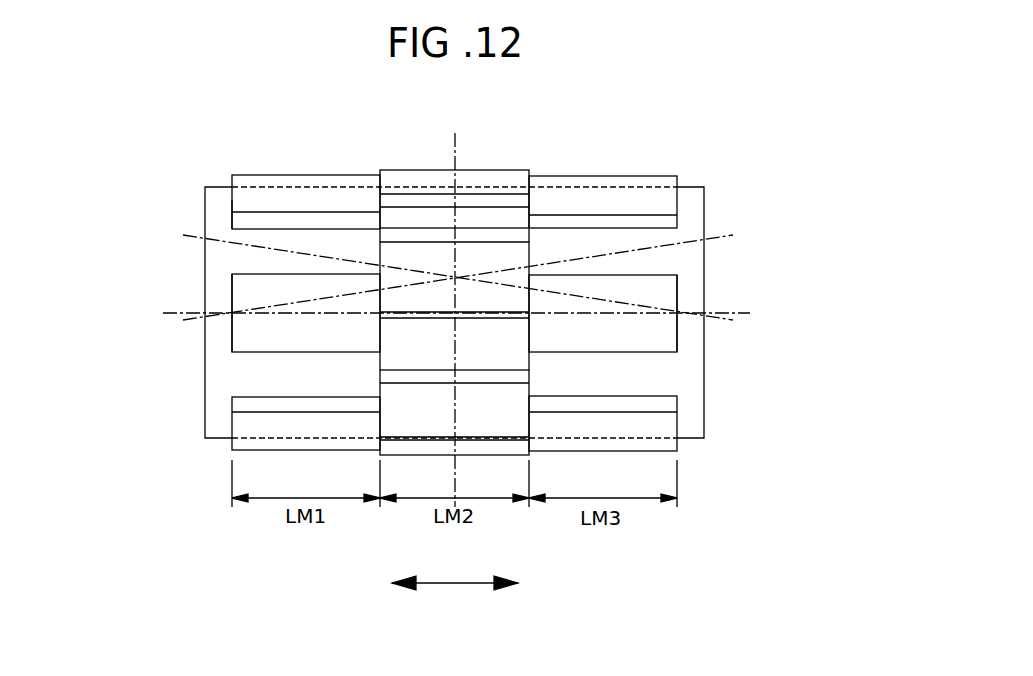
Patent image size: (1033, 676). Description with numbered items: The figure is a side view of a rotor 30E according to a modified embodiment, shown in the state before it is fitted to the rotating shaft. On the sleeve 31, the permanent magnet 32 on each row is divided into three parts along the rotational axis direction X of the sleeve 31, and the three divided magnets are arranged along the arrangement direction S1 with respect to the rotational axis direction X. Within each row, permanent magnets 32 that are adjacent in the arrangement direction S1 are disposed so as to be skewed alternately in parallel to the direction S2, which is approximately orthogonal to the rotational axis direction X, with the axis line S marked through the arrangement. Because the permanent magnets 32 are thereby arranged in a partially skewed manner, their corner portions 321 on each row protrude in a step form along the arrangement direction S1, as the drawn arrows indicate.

The rotor 30E is at (715, 174).
The sleeve 31 is at (706, 200).
The permanent magnet 32 is at (295, 200).
The corner portion 321 is at (217, 209).
The optical axis S is at (165, 314).
The arrangement direction S1 is at (185, 238).
The direction approximately orthogonal to the rotational axis direction S2 is at (455, 140).
The rotational axis direction X is at (455, 585).